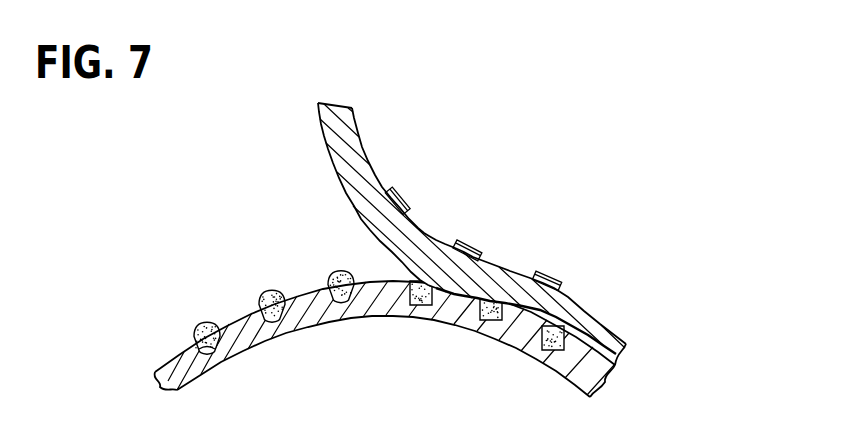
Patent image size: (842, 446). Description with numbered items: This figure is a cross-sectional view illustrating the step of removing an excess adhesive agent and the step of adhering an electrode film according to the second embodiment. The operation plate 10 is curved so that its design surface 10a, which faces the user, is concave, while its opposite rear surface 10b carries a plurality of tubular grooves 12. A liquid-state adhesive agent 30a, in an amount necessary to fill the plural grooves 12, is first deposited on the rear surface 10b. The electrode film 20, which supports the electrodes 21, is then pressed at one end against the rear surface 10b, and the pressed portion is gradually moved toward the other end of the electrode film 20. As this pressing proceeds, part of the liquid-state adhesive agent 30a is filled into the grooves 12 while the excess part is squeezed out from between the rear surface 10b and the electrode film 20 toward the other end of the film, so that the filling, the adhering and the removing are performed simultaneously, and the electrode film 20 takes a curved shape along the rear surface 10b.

The operation plate 10 is at (379, 334).
The design surface 10a is at (194, 384).
The rear surface 10b is at (165, 363).
The grooves 12 is at (213, 351).
The electrode film 20 is at (507, 234).
The electrodes 21 is at (401, 193).
The liquid-state adhesive agent 30a is at (206, 321).